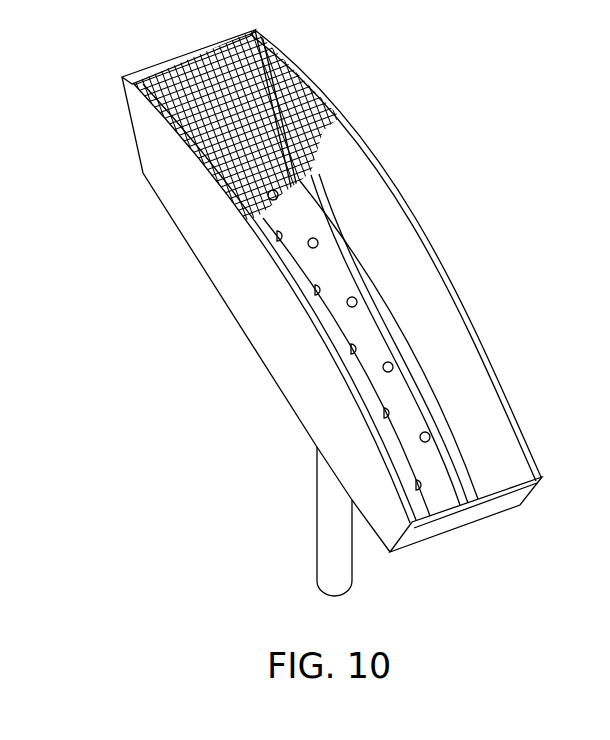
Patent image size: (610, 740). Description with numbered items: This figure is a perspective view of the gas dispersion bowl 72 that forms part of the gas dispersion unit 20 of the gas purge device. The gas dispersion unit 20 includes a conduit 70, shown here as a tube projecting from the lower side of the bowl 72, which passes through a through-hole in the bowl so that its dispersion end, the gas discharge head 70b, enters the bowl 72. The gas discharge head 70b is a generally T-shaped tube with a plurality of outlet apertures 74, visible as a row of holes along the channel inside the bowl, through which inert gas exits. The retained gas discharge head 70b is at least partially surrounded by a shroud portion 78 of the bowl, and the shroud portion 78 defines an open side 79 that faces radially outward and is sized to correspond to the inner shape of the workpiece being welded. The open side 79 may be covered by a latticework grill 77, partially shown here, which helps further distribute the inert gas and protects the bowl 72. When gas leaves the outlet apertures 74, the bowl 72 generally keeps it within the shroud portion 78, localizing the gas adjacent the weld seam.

The gas dispersion unit 20 is at (352, 313).
The conduit 70 is at (337, 532).
The gas discharge head 70b is at (402, 402).
The gas dispersion bowl 72 is at (393, 227).
The outlet apertures 74 is at (355, 297).
The latticework grill 77 is at (302, 62).
The shroud portion 78 is at (470, 515).
The open side 79 is at (432, 310).